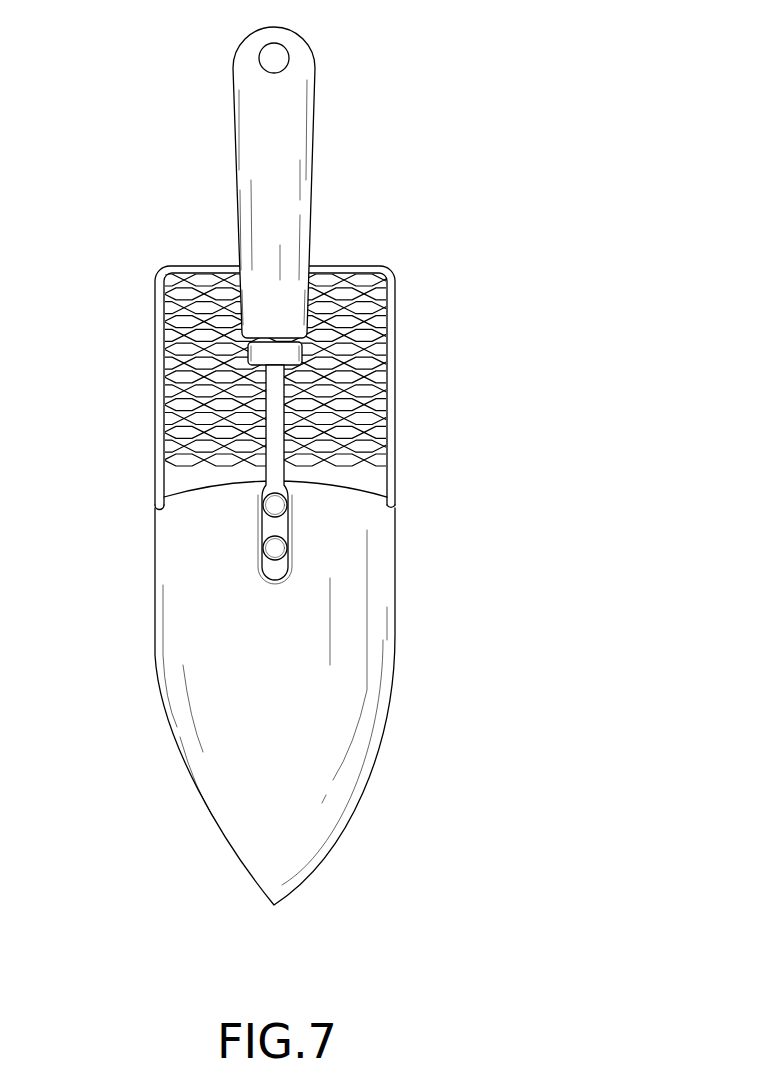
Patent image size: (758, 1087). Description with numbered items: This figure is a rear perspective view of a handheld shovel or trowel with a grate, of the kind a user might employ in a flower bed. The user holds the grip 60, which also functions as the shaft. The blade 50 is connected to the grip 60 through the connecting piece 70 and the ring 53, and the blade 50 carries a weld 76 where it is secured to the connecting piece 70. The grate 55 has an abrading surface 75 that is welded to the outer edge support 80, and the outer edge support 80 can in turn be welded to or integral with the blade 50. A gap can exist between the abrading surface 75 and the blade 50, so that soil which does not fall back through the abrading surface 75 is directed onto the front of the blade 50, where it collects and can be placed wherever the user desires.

The blade 50 is at (363, 780).
The ring 53 is at (300, 353).
The grate 55 is at (230, 466).
The grip 60 is at (313, 125).
The connecting piece 70 is at (283, 418).
The abrading surface 75 is at (333, 298).
The weld 76 is at (270, 527).
The outer edge support 80 is at (156, 364).